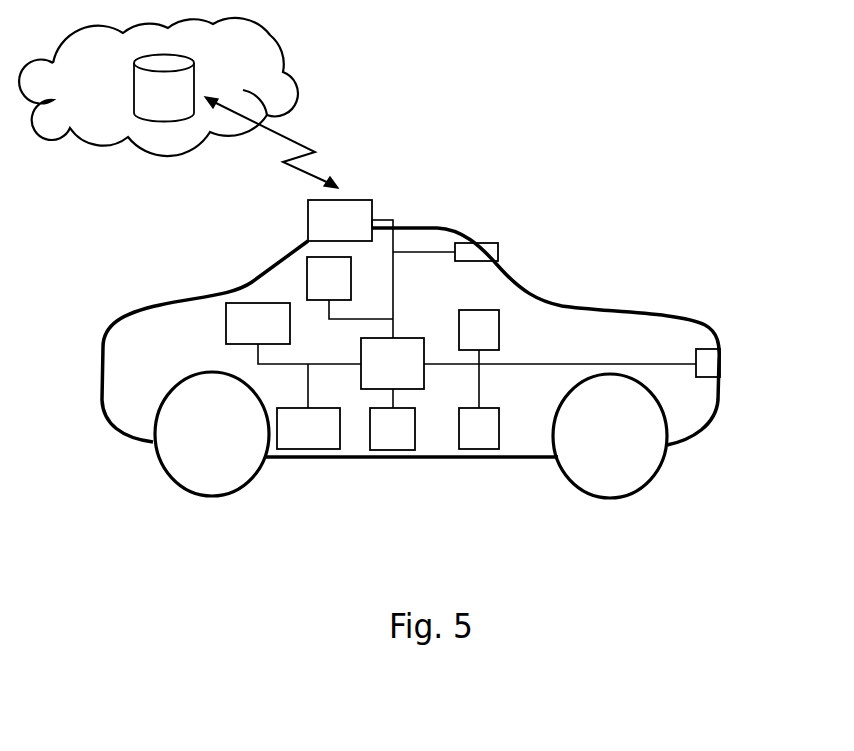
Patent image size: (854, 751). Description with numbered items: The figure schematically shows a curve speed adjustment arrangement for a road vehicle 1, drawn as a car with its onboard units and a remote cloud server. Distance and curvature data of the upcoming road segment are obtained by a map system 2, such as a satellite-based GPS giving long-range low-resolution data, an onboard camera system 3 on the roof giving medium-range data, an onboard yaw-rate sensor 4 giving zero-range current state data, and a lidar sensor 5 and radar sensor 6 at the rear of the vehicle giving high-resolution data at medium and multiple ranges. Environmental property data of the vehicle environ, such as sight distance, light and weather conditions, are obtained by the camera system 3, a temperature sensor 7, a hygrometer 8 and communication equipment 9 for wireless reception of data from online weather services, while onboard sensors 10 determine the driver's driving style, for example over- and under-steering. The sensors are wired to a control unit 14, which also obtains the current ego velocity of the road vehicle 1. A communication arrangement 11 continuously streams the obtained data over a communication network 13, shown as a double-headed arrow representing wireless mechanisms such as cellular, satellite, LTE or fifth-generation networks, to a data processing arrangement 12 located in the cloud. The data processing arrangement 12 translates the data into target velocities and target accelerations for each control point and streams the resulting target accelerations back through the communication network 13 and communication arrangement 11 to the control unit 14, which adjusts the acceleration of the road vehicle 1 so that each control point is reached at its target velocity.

The road vehicle 1 is at (466, 212).
The map system 2 is at (470, 344).
The onboard camera system 3 is at (478, 253).
The onboard yaw-rate sensor 4 is at (470, 444).
The onboard lidar sensor 5 is at (757, 348).
The onboard radar sensor 6 is at (710, 368).
The temperature sensor 7 is at (299, 444).
The hygrometer 8 is at (383, 444).
The communication equipment 9 is at (320, 296).
The onboard sensors for determining driving style 10 is at (242, 337).
The communication arrangement 11 is at (324, 236).
The data processing arrangement 12 is at (150, 107).
The communication network 13 is at (302, 144).
The control unit 14 is at (376, 379).